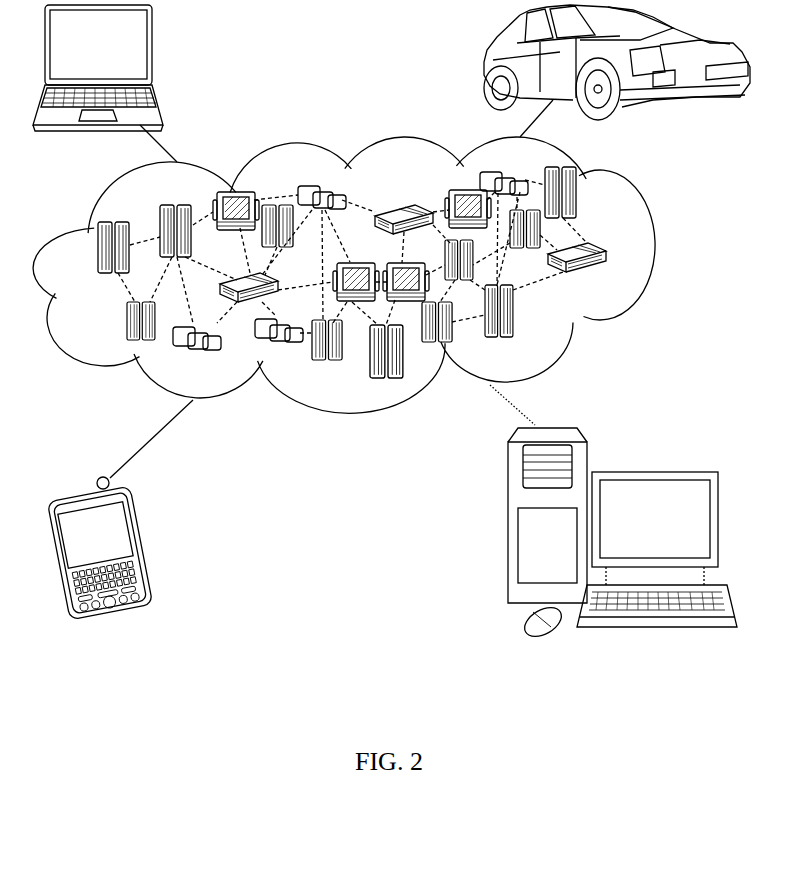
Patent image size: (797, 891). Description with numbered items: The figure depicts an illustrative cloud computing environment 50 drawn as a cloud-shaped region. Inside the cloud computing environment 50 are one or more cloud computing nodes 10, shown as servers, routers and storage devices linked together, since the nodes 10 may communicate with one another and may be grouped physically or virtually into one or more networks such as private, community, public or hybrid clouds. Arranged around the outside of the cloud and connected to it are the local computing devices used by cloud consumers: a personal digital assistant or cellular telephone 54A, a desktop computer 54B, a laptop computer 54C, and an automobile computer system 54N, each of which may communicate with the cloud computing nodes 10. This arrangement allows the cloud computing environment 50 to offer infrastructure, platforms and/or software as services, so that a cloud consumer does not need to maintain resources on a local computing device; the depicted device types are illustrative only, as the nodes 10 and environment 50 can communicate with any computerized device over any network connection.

The cloud computing nodes 10 is at (606, 279).
The cloud computing environment 50 is at (657, 254).
The personal digital assistant or cellular telephone 54A is at (140, 543).
The desktop computer 54B is at (653, 472).
The laptop computer 54C is at (153, 52).
The automobile computer system 54N is at (485, 65).